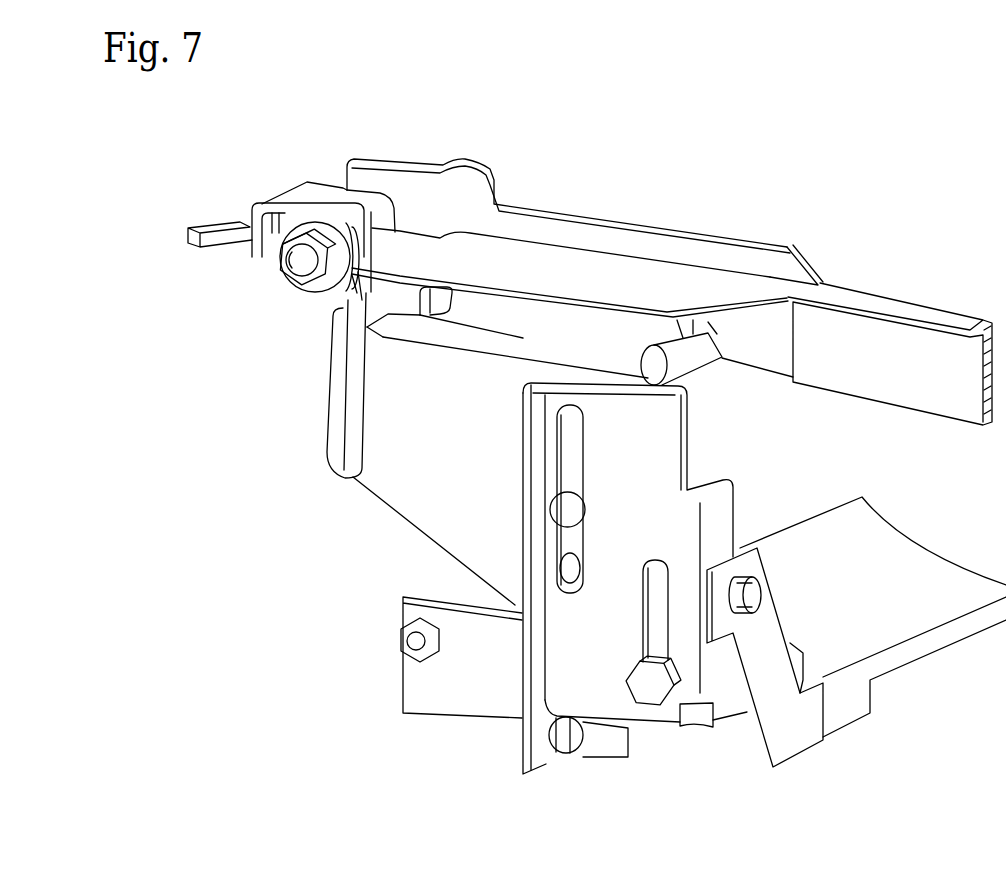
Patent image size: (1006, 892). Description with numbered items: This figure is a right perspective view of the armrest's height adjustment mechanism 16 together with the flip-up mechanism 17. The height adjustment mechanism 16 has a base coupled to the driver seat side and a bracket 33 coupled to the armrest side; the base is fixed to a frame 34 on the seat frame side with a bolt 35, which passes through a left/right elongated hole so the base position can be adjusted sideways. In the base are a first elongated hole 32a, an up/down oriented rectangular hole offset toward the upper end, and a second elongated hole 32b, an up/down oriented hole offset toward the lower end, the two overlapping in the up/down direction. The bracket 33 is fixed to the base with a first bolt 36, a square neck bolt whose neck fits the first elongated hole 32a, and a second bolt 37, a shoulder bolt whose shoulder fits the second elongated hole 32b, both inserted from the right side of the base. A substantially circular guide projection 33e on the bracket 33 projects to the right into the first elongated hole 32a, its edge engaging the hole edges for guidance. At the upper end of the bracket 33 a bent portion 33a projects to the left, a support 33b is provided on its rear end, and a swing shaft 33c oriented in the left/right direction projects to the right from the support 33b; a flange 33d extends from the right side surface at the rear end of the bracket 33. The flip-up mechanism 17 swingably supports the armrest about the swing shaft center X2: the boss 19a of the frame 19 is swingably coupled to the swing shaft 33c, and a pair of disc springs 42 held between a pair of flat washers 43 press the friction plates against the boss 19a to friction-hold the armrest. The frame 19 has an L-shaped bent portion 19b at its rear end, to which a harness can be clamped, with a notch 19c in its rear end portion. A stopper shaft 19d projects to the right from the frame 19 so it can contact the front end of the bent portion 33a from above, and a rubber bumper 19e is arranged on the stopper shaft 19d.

The height adjustment mechanism 16 is at (513, 485).
The flip-up mechanism 17 is at (297, 303).
The frame 19 is at (902, 310).
The boss 19a is at (350, 220).
The bent portion 19b is at (240, 217).
The notch 19c is at (280, 247).
The stopper shaft 19d is at (722, 345).
The rubber bumper 19e is at (690, 360).
The first elongated hole 32a is at (572, 438).
The second elongated hole 32b is at (660, 622).
The bracket 33 is at (413, 490).
The bent portion 33a is at (530, 353).
The support 33b is at (402, 297).
The swing shaft 33c is at (290, 268).
The flange 33d is at (358, 385).
The guide projection 33e is at (565, 568).
The frame 34 is at (917, 648).
The bolt 35 is at (753, 598).
The first bolt 36 is at (570, 512).
The second bolt 37 is at (640, 697).
The disc springs 42 is at (348, 216).
The flat washers 43 is at (311, 295).
The swing shaft center X2 is at (295, 268).